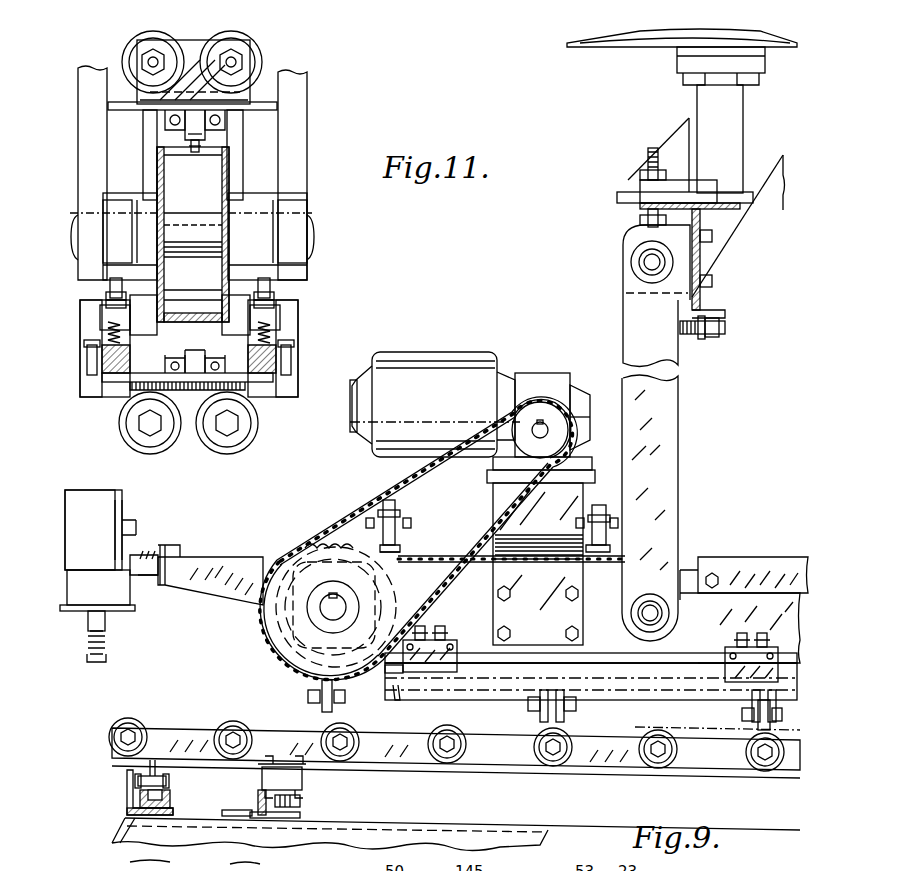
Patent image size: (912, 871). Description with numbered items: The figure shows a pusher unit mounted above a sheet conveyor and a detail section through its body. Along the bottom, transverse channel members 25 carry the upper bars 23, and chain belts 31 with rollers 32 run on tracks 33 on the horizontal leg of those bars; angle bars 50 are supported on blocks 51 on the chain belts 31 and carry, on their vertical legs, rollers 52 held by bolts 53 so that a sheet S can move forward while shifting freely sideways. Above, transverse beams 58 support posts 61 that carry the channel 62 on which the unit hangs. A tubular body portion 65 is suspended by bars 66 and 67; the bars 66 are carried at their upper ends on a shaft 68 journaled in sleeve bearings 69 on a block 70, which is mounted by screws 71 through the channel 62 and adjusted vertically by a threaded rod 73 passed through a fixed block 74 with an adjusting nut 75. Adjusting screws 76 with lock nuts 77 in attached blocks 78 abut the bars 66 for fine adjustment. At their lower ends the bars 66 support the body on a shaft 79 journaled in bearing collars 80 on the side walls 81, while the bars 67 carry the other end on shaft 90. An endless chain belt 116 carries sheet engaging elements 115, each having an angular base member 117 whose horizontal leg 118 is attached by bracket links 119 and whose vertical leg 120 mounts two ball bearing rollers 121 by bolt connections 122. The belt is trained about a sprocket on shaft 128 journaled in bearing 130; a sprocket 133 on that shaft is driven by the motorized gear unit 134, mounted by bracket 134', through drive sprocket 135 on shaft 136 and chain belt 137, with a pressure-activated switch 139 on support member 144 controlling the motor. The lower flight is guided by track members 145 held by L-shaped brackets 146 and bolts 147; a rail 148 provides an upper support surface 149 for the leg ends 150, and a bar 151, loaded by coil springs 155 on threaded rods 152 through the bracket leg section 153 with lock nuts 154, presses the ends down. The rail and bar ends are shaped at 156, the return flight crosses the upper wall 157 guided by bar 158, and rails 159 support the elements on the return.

In FIG. 9, the upper bars 23 is at (127, 798).
In FIG. 9, the channel members 25 is at (500, 836).
In FIG. 9, the chain belts 31 is at (135, 781).
In FIG. 9, the rollers 32 is at (170, 800).
In FIG. 9, the tracks 33 is at (130, 813).
In FIG. 9, the angle bars 50 is at (470, 752).
In FIG. 9, the blocks 51 is at (160, 772).
In FIG. 9, the rollers 52 is at (135, 725).
In FIG. 9, the bolts 53 is at (140, 735).
In FIG. 9, the strip S is at (700, 731).
In FIG. 9, the transverse beams 58 is at (615, 44).
In FIG. 9, the posts 61 is at (715, 122).
In FIG. 9, the channel 62 is at (700, 262).
In FIG. 11, the tubular base or body portion 65 is at (143, 192).
In FIG. 9, the tubular base or body portion 65 is at (690, 568).
In FIG. 9, the bars 66 is at (655, 413).
In FIG. 11, the bars 67 is at (90, 167).
In FIG. 9, the shaft 68 is at (646, 263).
In FIG. 9, the sleeve bearings 69 is at (631, 258).
In FIG. 9, the block 70 is at (630, 235).
In FIG. 9, the screws 71 is at (712, 237).
In FIG. 9, the threaded rod 73 is at (648, 152).
In FIG. 9, the block 74 is at (652, 193).
In FIG. 9, the adjusting nut 75 is at (645, 173).
In FIG. 9, the adjusting screws 76 is at (725, 328).
In FIG. 9, the lock nuts 77 is at (716, 336).
In FIG. 9, the blocks 78 is at (701, 339).
In FIG. 9, the shaft 79 is at (640, 610).
In FIG. 9, the bearing collars 80 is at (638, 615).
In FIG. 11, the side walls 81 is at (215, 262).
In FIG. 9, the side walls 81 is at (760, 600).
In FIG. 11, the shaft 90 is at (310, 232).
In FIG. 11, the sheet engaging elements 115 is at (250, 50).
In FIG. 9, the sheet engaging elements 115 is at (408, 528).
In FIG. 11, the endless chain belt 116 is at (222, 127).
In FIG. 9, the endless chain belt 116 is at (455, 553).
In FIG. 11, the angular base member 117 is at (258, 90).
In FIG. 9, the angular base member 117 is at (392, 548).
In FIG. 11, the horizontal flange or leg 118 is at (260, 104).
In FIG. 11, the bracket links 119 is at (170, 127).
In FIG. 11, the vertical leg 120 is at (145, 70).
In FIG. 11, the ball bearing rollers 121 is at (135, 45).
In FIG. 9, the ball bearing rollers 121 is at (394, 508).
In FIG. 11, the bolt connections 122 is at (240, 62).
In FIG. 9, the bolt connections 122 is at (376, 522).
In FIG. 9, the shaft 128 is at (325, 608).
In FIG. 9, the bearing 130 is at (263, 640).
In FIG. 9, the sprocket 133 is at (362, 513).
In FIG. 9, the motorized gear unit 134 is at (435, 388).
In FIG. 9, the bracket 134' is at (518, 551).
In FIG. 9, the drive sprocket 135 is at (536, 415).
In FIG. 9, the shaft 136 is at (550, 420).
In FIG. 9, the chain belt 137 is at (306, 545).
In FIG. 9, the pressure-activated switch device 139 is at (85, 600).
In FIG. 9, the support member 144 is at (226, 568).
In FIG. 11, the track members 145 is at (80, 378).
In FIG. 9, the track members 145 is at (582, 690).
In FIG. 11, the L-shaped brackets 146 is at (90, 330).
In FIG. 9, the L-shaped brackets 146 is at (445, 655).
In FIG. 11, the bolts 147 is at (88, 312).
In FIG. 9, the bolts 147 is at (450, 642).
In FIG. 11, the lower bar or rail 148 is at (90, 390).
In FIG. 9, the lower bar or rail 148 is at (493, 692).
In FIG. 11, the upper support surface 149 is at (125, 376).
In FIG. 9, the upper support surface 149 is at (418, 688).
In FIG. 11, the ends 150 is at (108, 106).
In FIG. 11, the bar 151 is at (87, 355).
In FIG. 9, the bar 151 is at (590, 667).
In FIG. 11, the threaded rods 152 is at (110, 284).
In FIG. 9, the threaded rods 152 is at (428, 630).
In FIG. 11, the horizontal leg section 153 is at (118, 310).
In FIG. 11, the lock nuts 154 is at (222, 294).
In FIG. 11, the coil springs 155 is at (121, 330).
In FIG. 9, the shaped ends 156 is at (393, 684).
In FIG. 11, the upper wall 157 is at (186, 160).
In FIG. 11, the bar 158 is at (200, 152).
In FIG. 11, the rails 159 is at (148, 125).
In FIG. 9, the rails 159 is at (750, 565).